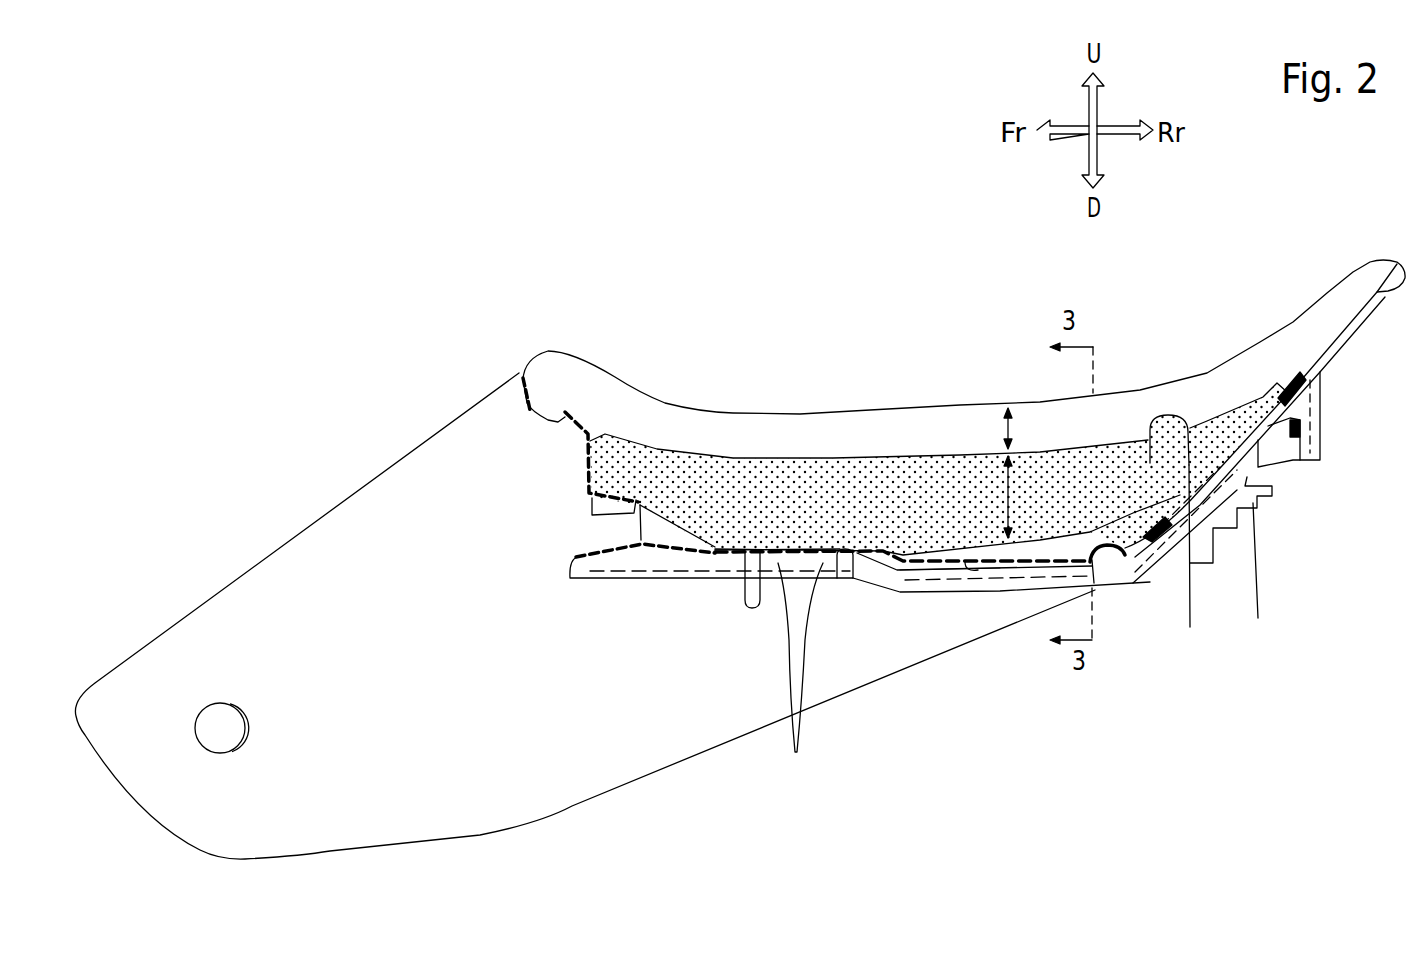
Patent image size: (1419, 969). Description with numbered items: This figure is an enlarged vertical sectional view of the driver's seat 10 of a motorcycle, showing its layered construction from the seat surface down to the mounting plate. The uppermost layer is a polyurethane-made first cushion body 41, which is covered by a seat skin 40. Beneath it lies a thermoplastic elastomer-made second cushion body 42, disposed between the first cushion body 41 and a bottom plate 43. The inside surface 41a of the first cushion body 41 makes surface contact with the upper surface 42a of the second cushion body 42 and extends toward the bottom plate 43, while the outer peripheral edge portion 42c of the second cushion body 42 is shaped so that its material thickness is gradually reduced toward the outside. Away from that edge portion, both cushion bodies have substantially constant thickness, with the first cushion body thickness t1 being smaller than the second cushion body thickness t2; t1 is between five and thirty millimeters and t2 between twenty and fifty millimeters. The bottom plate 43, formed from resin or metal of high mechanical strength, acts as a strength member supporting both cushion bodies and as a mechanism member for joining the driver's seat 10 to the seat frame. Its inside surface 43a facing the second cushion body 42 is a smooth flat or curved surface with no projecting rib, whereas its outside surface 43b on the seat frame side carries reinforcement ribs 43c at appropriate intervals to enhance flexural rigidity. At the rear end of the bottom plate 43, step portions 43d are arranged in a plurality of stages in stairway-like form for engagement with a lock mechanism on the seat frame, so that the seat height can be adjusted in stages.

The driver's seat 10 is at (529, 307).
The seat skin 40 is at (648, 384).
The first cushion body 41 is at (687, 428).
The inside surface of the first cushion body 41a is at (1125, 447).
The second cushion body 42 is at (804, 496).
The upper surface of the second cushion body 42a is at (1190, 565).
The outer peripheral edge portion of the second cushion body 42c is at (1245, 417).
The bottom plate 43 is at (912, 572).
The inside surface of the bottom plate 43a is at (738, 550).
The outside surface of the bottom plate 43b is at (1027, 567).
The reinforcement ribs 43c is at (799, 676).
The step portions 43d is at (1228, 527).
The material thickness of the first cushion body t1 is at (1006, 411).
The material thickness of the second cushion body t2 is at (1003, 498).